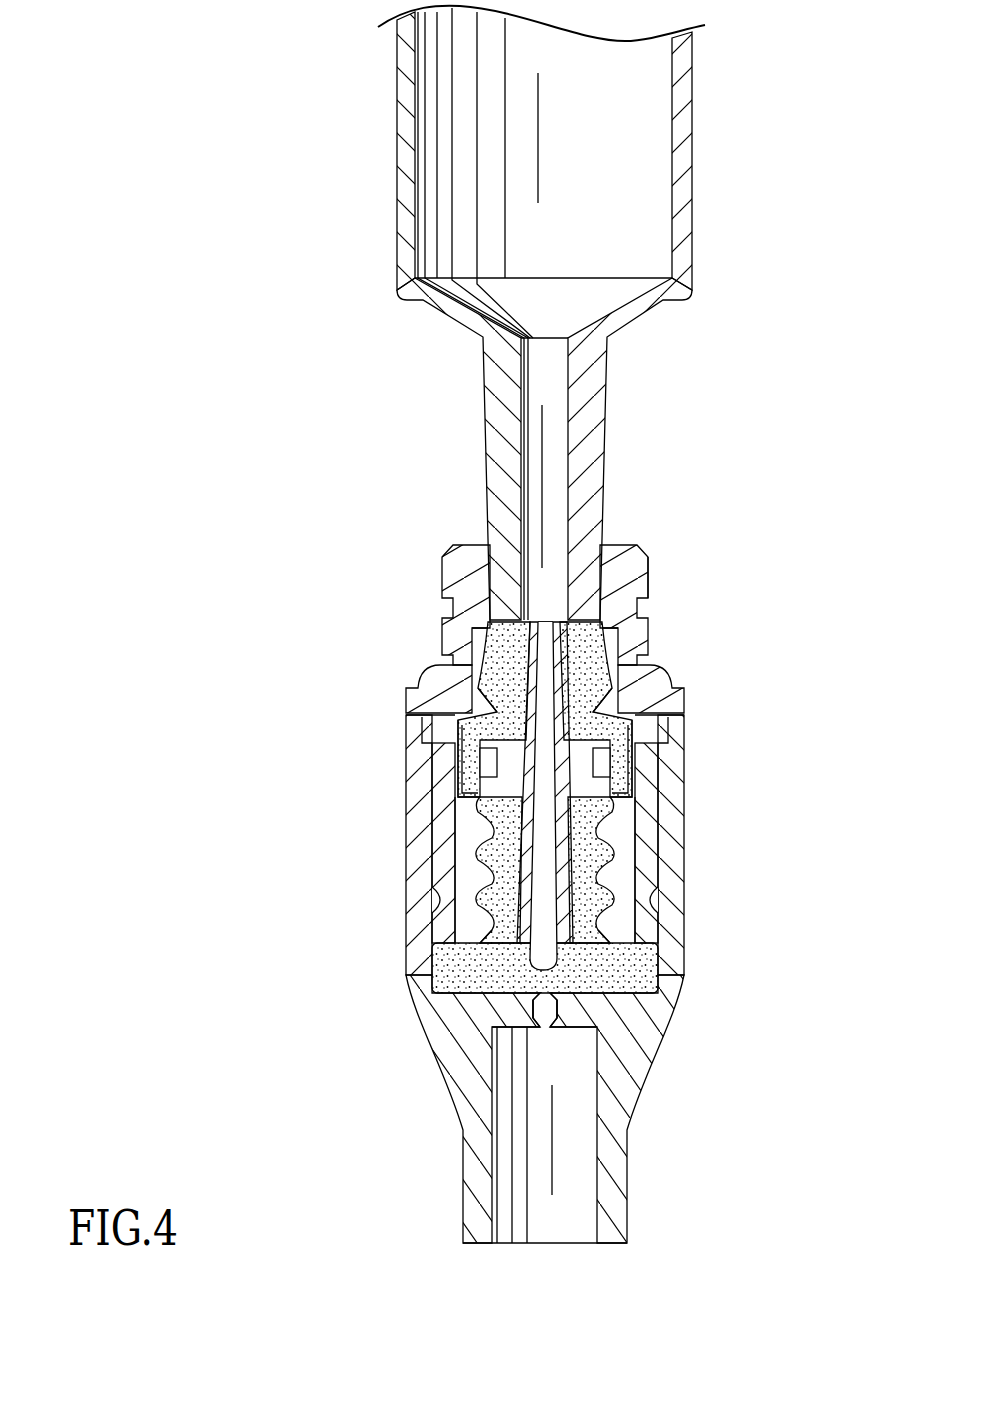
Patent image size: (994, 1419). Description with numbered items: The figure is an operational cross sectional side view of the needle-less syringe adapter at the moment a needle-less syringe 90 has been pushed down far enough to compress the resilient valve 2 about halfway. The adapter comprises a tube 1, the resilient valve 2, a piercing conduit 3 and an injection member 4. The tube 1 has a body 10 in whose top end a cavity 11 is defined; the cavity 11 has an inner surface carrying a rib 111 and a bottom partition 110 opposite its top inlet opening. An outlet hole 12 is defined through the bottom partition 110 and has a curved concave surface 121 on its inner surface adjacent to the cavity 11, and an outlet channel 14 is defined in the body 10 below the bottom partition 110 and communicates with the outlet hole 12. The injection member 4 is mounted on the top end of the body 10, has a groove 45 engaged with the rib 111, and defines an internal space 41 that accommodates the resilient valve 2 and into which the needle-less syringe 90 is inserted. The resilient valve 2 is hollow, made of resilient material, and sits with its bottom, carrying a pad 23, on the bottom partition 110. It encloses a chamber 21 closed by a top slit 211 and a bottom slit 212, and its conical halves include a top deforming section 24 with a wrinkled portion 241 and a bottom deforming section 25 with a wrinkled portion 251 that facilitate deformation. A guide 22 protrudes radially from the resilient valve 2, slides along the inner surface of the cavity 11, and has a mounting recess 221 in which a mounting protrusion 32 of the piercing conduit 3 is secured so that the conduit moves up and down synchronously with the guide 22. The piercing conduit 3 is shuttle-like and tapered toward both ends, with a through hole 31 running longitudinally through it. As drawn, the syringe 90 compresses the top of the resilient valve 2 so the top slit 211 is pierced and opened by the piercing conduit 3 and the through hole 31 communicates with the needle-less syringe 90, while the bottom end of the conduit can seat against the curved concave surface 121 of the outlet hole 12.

The needle-less syringe 90 is at (692, 186).
The injection member 4 is at (663, 553).
The internal space 41 is at (600, 588).
The piercing conduit 3 is at (478, 707).
The through hole 31 is at (540, 620).
The top deforming section 24 is at (610, 700).
The wrinkled portion 241 is at (495, 675).
The guide 22 is at (622, 742).
The mounting recess 221 is at (493, 778).
The mounting protrusion 32 is at (598, 768).
The bottom deforming section 25 is at (497, 847).
The wrinkled portion 251 is at (488, 932).
The chamber 21 is at (522, 850).
The top slit 211 is at (566, 645).
The pad 23 is at (637, 973).
The bottom slit 212 is at (556, 996).
The tube 1 is at (567, 1005).
The body 10 is at (677, 967).
The cavity 11 is at (443, 812).
The rib 111 is at (655, 900).
The groove 45 is at (655, 908).
The outlet hole 12 is at (577, 1025).
The outlet channel 14 is at (522, 1232).
The curved concave surface 121 is at (534, 1005).
The bottom partition 110 is at (548, 1012).
The resilient valve 2 is at (622, 851).